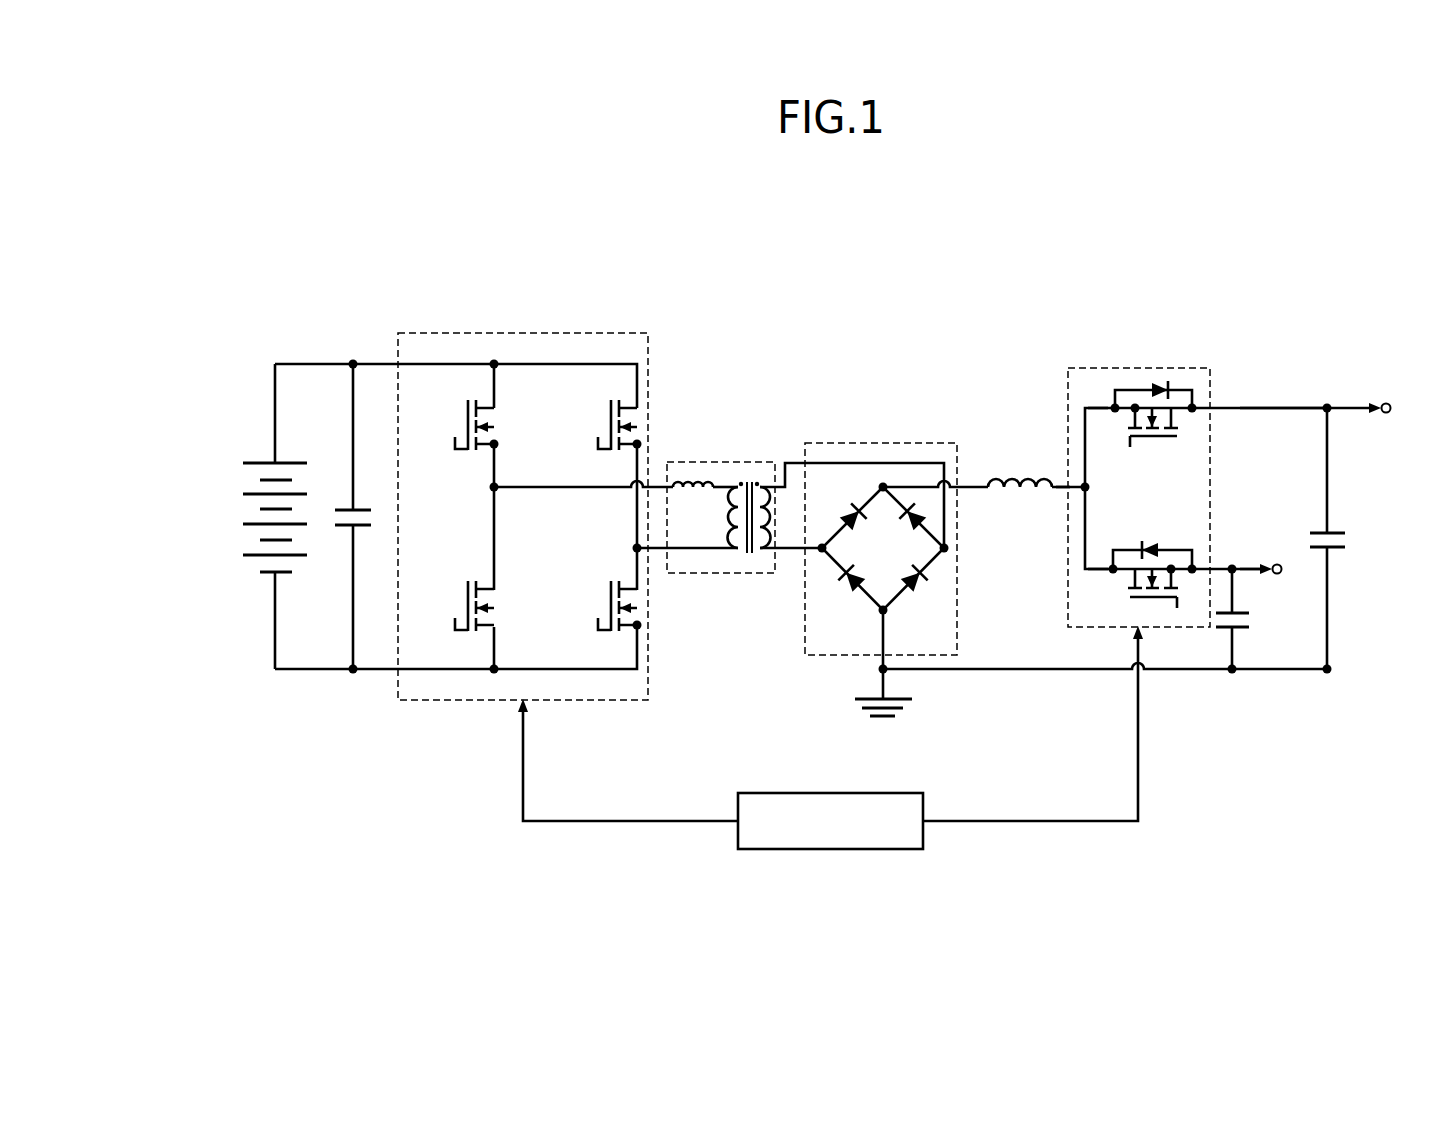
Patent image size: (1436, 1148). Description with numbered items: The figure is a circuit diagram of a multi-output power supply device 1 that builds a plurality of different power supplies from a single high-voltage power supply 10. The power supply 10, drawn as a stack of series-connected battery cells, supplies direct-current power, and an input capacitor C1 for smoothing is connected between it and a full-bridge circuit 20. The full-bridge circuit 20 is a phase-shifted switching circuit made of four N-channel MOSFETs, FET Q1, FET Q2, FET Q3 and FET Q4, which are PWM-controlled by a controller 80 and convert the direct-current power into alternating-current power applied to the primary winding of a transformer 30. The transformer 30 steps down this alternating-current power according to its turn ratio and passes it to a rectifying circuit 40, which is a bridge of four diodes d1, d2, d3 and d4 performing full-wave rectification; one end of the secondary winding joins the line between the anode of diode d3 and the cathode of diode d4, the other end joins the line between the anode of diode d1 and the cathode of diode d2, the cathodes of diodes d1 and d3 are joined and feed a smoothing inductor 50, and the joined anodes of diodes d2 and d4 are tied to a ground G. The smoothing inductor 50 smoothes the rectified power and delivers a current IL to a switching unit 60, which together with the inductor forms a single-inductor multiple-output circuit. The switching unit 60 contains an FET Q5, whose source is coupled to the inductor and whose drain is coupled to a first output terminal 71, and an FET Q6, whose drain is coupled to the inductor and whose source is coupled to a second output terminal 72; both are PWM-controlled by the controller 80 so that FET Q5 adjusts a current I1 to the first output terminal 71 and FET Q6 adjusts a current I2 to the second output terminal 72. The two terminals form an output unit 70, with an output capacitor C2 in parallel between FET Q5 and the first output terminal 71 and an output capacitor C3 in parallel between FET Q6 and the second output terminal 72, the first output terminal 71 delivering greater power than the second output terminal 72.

The multi-output power supply device 1 is at (810, 266).
The power supply 10 is at (226, 516).
The full-bridge circuit 20 is at (522, 333).
The transformer 30 is at (721, 462).
The rectifying circuit 40 is at (881, 443).
The smoothing inductor 50 is at (1023, 478).
The switching unit 60 is at (1139, 368).
The output unit 70 is at (1324, 447).
The first output terminal 71 is at (1386, 403).
The second output terminal 72 is at (1276, 564).
The controller 80 is at (831, 851).
The input capacitor C1 is at (358, 508).
The output capacitor C2 is at (1335, 531).
The output capacitor C3 is at (1240, 630).
The FET Q1 is at (462, 463).
The FET Q2 is at (462, 574).
The FET Q3 is at (606, 462).
The FET Q4 is at (606, 648).
The FET Q5 is at (1116, 437).
The FET Q6 is at (1112, 598).
The diode d1 is at (846, 506).
The diode d2 is at (848, 585).
The diode d3 is at (921, 506).
The diode d4 is at (918, 585).
The ground G is at (885, 720).
The current I1 is at (1097, 406).
The current I2 is at (1097, 572).
The current IL is at (1062, 490).